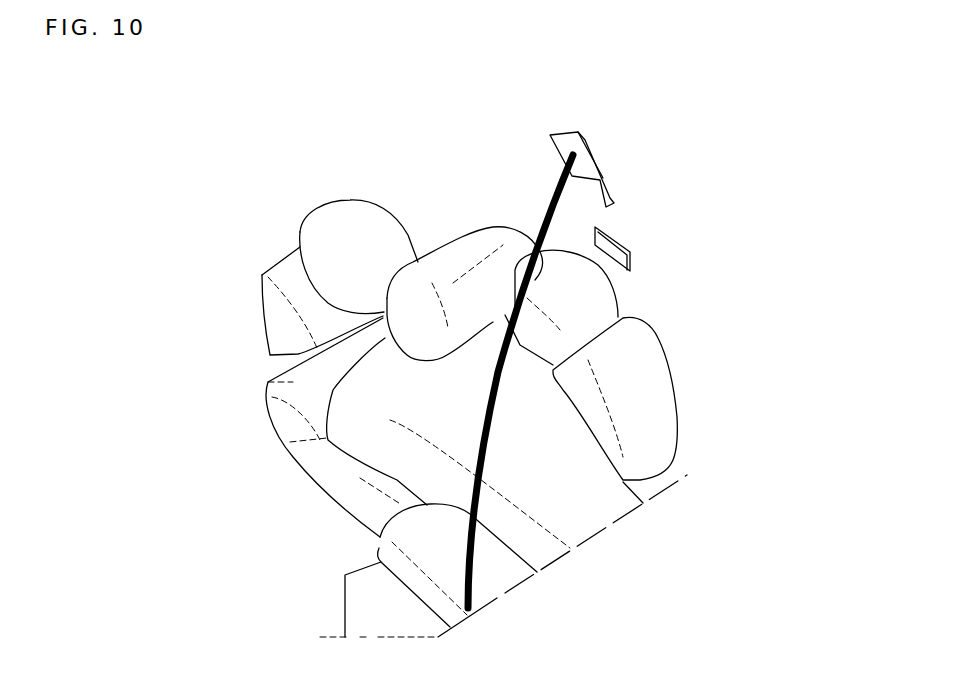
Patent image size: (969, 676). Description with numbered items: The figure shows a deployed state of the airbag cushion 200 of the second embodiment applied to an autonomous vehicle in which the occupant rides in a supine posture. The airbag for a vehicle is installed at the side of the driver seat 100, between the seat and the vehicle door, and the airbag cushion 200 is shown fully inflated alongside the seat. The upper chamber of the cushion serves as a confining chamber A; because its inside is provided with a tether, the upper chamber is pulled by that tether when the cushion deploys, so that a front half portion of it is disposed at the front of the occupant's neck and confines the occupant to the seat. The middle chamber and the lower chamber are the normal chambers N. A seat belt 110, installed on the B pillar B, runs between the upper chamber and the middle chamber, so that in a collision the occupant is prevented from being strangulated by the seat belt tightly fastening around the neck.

The driver seat 100 is at (270, 382).
The seat belt 110 is at (560, 182).
The airbag cushion 200 is at (714, 384).
The confining chamber A is at (462, 252).
The B pillar B is at (593, 163).
The normal chambers N is at (600, 292).